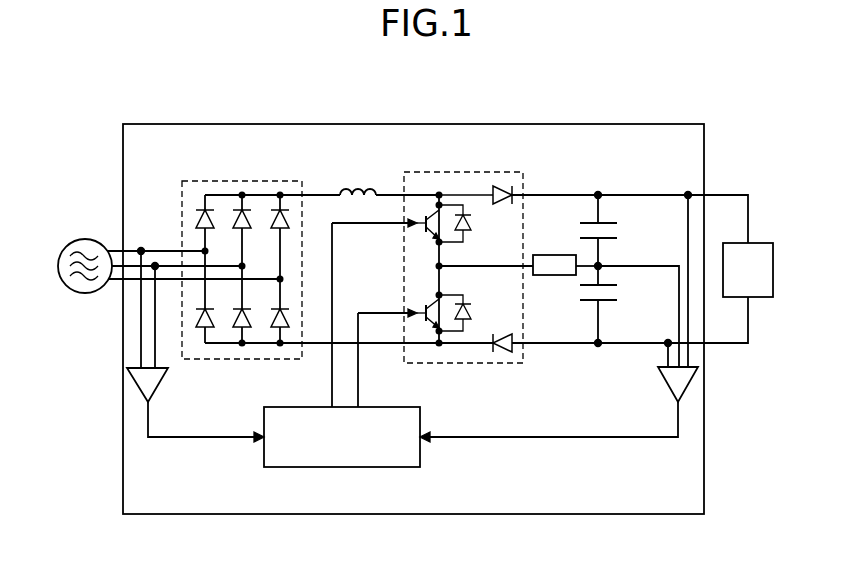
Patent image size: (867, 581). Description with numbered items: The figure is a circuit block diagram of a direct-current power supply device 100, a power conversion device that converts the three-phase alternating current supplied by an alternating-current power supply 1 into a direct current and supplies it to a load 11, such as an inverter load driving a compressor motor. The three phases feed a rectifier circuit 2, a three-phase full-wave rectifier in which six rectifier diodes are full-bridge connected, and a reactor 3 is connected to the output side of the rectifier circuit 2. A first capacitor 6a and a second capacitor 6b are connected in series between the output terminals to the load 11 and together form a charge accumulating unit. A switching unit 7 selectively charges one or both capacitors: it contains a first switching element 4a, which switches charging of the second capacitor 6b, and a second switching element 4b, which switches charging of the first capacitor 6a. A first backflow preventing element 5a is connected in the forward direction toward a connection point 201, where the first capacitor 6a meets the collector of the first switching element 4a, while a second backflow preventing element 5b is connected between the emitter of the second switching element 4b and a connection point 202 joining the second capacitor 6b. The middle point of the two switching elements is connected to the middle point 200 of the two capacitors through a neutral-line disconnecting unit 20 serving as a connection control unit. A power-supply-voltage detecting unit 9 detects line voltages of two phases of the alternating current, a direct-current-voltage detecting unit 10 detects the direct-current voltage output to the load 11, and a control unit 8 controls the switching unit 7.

The direct-current power supply device 100 is at (637, 124).
The alternating-current power supply 1 is at (93, 239).
The rectifier circuit 2 is at (274, 181).
The reactor 3 is at (359, 184).
The switching unit 7 is at (427, 266).
The first switching element 4a is at (424, 236).
The second switching element 4b is at (424, 305).
The first backflow preventing element 5a is at (508, 184).
The second backflow preventing element 5b is at (505, 356).
The neutral-line disconnecting unit 20 is at (556, 255).
The connection point 201 is at (599, 191).
The middle point 200 is at (603, 270).
The connection point 202 is at (598, 350).
The first capacitor 6a is at (618, 237).
The second capacitor 6b is at (612, 302).
The load 11 is at (757, 243).
The power-supply-voltage detecting unit 9 is at (158, 391).
The direct-current-voltage detecting unit 10 is at (668, 390).
The control unit 8 is at (343, 467).